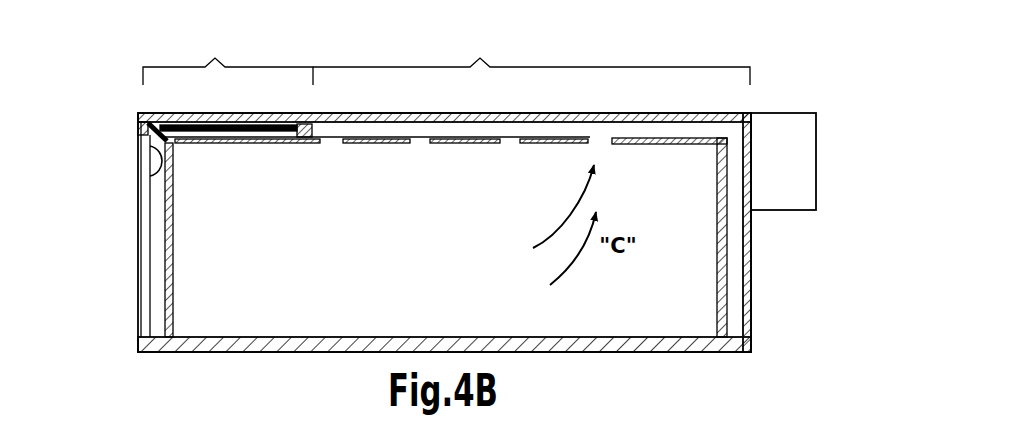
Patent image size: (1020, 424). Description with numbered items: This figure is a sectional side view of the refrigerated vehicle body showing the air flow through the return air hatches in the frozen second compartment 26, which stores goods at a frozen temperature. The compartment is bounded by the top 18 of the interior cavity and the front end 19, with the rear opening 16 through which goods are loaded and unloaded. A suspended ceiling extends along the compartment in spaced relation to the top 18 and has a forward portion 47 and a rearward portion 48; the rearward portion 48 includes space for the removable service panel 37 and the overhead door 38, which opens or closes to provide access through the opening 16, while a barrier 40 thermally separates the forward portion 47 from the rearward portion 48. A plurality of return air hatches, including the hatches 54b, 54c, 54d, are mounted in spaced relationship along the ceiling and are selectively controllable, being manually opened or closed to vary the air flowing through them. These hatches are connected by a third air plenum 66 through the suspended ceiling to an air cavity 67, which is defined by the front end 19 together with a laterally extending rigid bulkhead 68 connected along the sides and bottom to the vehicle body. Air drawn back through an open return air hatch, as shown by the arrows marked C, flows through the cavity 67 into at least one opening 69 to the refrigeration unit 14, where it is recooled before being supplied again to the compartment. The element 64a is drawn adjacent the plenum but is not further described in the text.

The refrigeration unit 14 is at (803, 136).
The opening 16 is at (122, 328).
The top 18 is at (457, 116).
The front end 19 is at (751, 232).
The second compartment 26 is at (205, 288).
The removable service panel 37 is at (245, 147).
The overhead door 38 is at (152, 172).
The barrier 40 is at (312, 130).
The forward portion 47 is at (531, 61).
The rearward portion 48 is at (228, 61).
The return air hatch 54b is at (508, 143).
The return air hatch 54c is at (420, 143).
The return air hatch 54d is at (334, 143).
The baffle plate 64a is at (612, 144).
The third air plenum 66 is at (641, 131).
The air cavity 67 is at (735, 310).
The rigid bulkhead 68 is at (718, 275).
The opening 69 is at (749, 199).